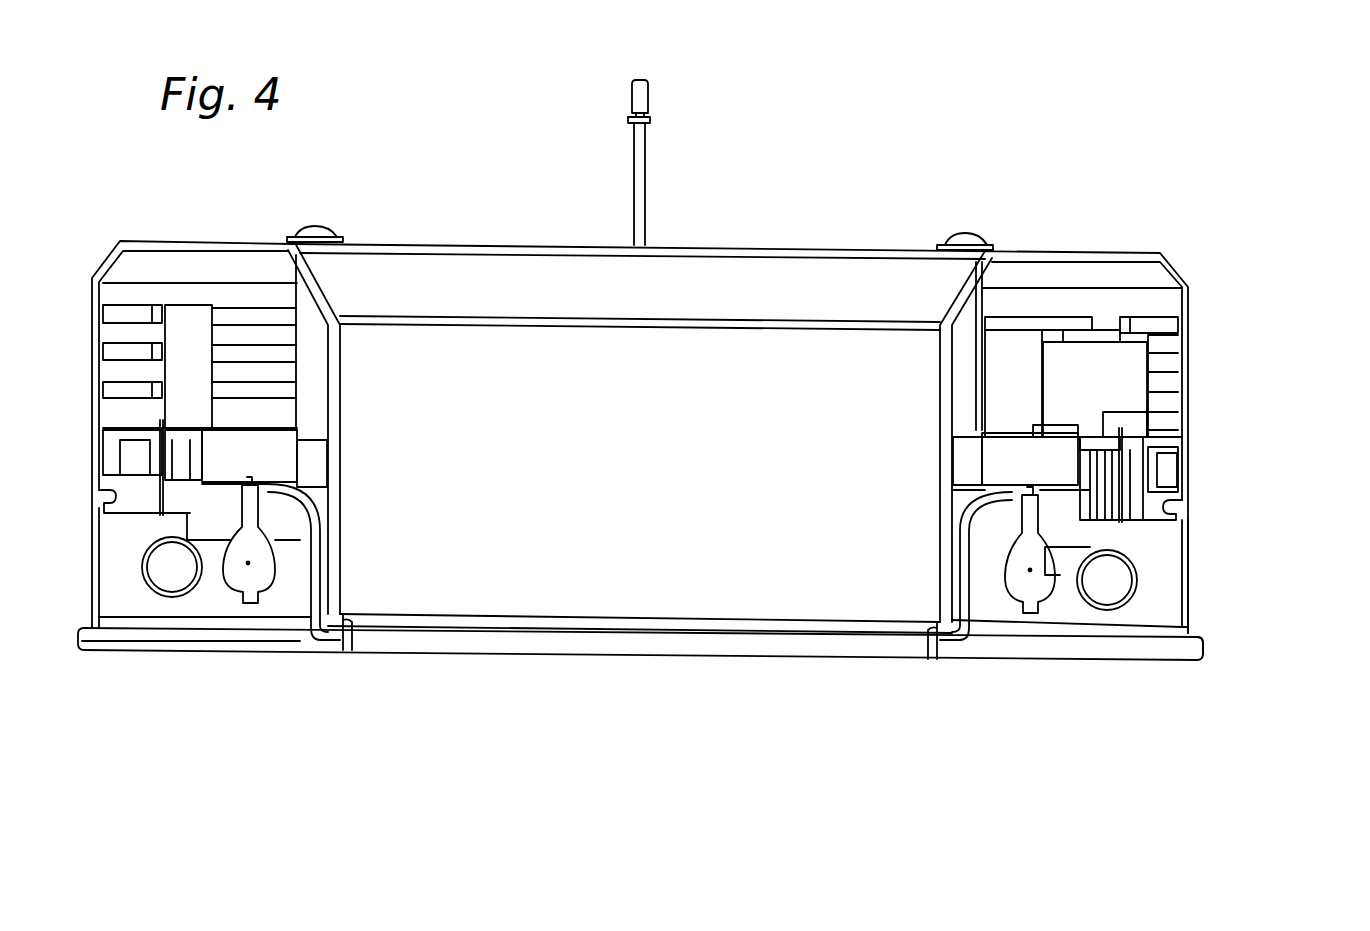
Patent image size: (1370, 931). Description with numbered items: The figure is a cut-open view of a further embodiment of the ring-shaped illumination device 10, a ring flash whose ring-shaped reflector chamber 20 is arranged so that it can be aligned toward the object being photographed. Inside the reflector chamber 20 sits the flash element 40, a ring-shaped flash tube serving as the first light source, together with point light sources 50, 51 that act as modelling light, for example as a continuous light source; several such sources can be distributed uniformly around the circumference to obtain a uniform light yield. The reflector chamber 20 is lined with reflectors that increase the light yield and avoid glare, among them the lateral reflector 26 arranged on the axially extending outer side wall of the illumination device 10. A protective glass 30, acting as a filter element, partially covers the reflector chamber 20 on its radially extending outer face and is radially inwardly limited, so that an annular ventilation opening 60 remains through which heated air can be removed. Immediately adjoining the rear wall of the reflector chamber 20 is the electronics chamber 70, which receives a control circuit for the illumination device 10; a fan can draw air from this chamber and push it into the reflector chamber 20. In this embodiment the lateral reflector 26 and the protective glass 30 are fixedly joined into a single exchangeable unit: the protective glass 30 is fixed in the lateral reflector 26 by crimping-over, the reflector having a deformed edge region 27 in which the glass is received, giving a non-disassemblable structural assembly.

The illumination device 10 is at (1040, 115).
The reflector chamber 20 is at (1189, 502).
The lateral reflector 26 is at (1197, 547).
The edge region 27 is at (1208, 622).
The protective glass 30 is at (1078, 643).
The flash element 40 is at (173, 572).
The point light source 50 is at (1003, 588).
The point light source 51 is at (254, 578).
The ventilation opening 60 is at (940, 663).
The electronics chamber 70 is at (1200, 320).